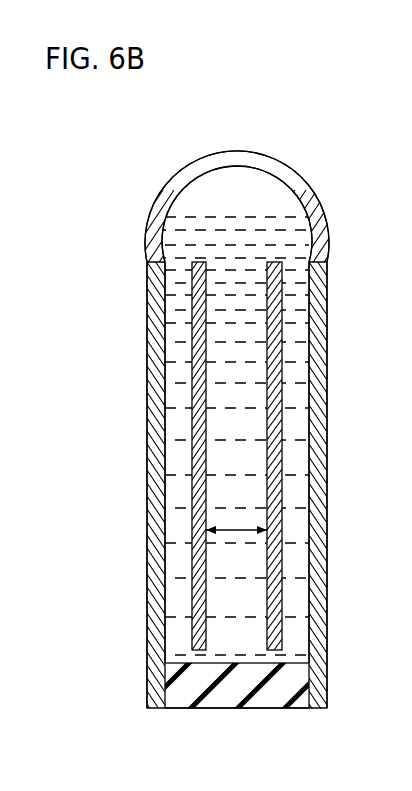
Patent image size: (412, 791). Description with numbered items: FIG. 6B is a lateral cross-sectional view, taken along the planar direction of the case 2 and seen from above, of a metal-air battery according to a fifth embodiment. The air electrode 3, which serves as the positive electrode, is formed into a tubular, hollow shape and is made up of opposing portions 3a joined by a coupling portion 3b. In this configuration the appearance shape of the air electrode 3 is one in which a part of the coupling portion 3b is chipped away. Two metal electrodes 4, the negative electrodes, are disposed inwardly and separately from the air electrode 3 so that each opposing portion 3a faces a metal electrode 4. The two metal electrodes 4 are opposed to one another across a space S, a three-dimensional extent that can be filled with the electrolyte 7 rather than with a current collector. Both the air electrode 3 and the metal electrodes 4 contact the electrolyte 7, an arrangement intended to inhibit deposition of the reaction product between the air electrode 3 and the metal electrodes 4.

The case 2 is at (216, 700).
The air electrode 3 is at (156, 627).
The opposing portion 3a is at (156, 366).
The coupling portion 3b is at (244, 193).
The metal electrode 4 is at (200, 427).
The electrolyte 7 is at (172, 333).
The space S is at (237, 534).